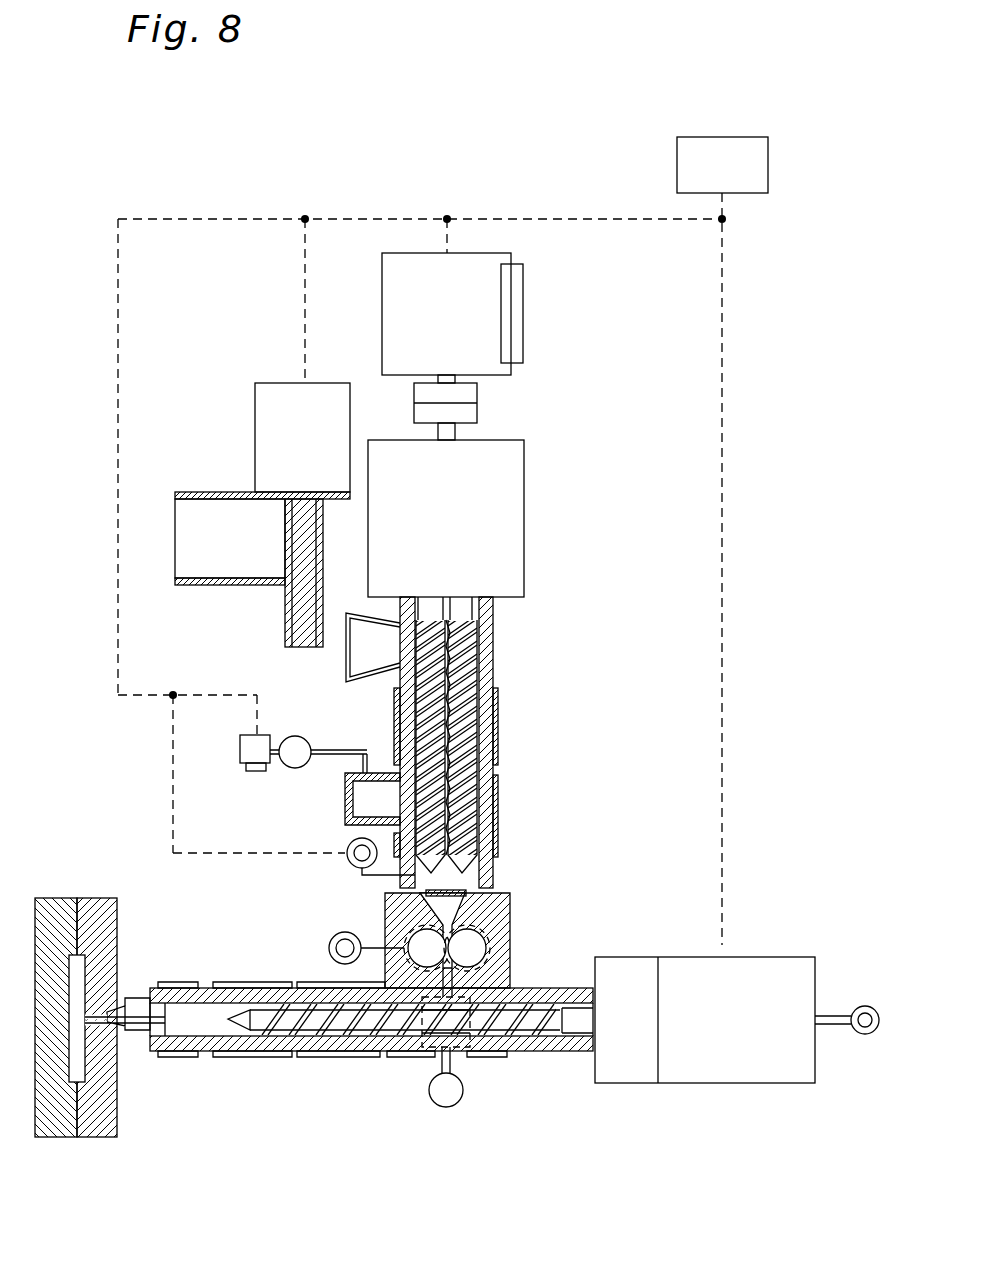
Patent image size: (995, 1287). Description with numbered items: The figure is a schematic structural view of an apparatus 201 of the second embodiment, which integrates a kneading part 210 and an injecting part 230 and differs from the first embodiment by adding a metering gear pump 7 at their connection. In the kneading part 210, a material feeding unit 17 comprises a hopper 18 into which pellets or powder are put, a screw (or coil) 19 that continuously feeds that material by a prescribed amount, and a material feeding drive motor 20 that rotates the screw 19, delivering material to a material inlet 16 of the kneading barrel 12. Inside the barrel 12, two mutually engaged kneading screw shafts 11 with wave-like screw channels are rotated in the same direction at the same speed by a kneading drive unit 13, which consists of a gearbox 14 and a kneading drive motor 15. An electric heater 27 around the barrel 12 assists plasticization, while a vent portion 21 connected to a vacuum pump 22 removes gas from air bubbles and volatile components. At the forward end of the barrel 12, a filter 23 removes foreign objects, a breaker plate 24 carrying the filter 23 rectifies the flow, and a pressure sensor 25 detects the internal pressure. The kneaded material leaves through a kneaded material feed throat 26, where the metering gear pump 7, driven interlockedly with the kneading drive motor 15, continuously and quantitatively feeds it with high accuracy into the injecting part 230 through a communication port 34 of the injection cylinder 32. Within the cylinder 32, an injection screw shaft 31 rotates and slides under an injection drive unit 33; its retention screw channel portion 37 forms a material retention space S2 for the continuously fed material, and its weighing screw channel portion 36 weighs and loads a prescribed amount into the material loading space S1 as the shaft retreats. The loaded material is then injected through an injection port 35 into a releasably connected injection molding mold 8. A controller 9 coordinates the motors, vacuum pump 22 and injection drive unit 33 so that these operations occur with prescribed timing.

The apparatus integrated with a kneading part and an injecting part 201 is at (489, 488).
The kneading part 210 is at (503, 197).
The controller 9 is at (722, 165).
The kneading drive unit 13 is at (506, 354).
The gearbox 14 is at (524, 455).
The kneading drive motor 15 is at (512, 312).
The material feeding unit 17 is at (230, 484).
The material feeding drive motor 20 is at (255, 445).
The hopper 18 is at (175, 543).
The screw (or coil) 19 is at (285, 615).
The material inlet 16 is at (346, 660).
The kneading screw shaft 11 is at (470, 665).
The kneading barrel 12 is at (495, 708).
The electric heater 27 is at (495, 795).
The vent portion 21 is at (345, 808).
The vacuum pump 22 is at (240, 750).
The pressure sensor 25 is at (347, 862).
The filter 23 is at (457, 893).
The breaker plate 24 is at (452, 930).
The kneaded material feed throat 26 is at (480, 928).
The metering gear pump 7 is at (490, 950).
The injecting part 230 is at (708, 928).
The material loading space S1 is at (196, 1017).
The injection cylinder 32 is at (255, 1042).
The weighing screw channel portion 36 is at (303, 1022).
The injection screw shaft 31 is at (357, 1045).
The injection port 35 is at (135, 1028).
The material retention space S2 is at (410, 1042).
The communication port 34 is at (482, 1022).
The retention screw channel portion 37 is at (470, 1010).
The injection drive unit 33 is at (675, 1068).
The injection molding mold 8 is at (48, 1128).